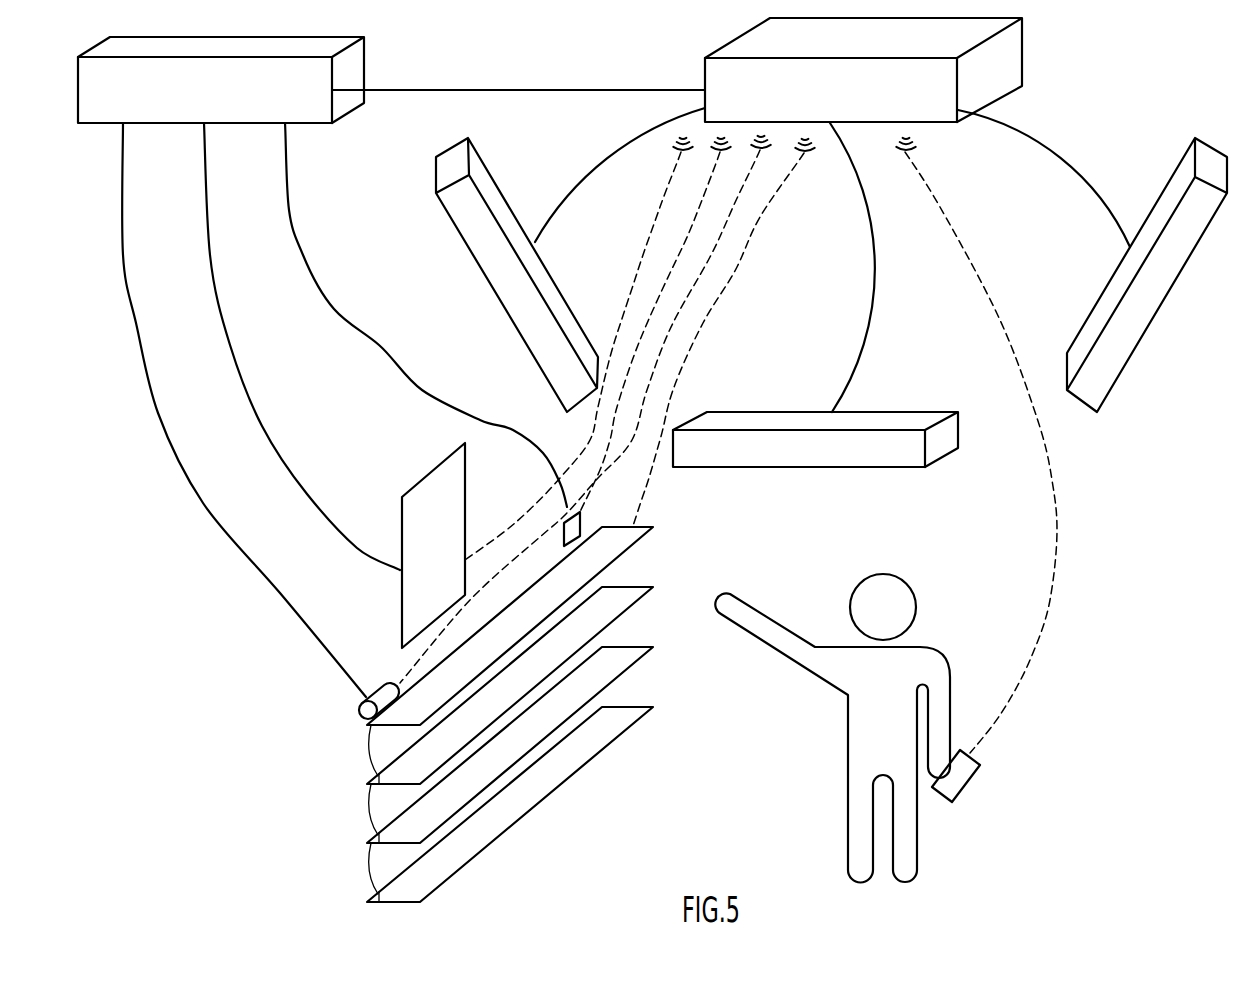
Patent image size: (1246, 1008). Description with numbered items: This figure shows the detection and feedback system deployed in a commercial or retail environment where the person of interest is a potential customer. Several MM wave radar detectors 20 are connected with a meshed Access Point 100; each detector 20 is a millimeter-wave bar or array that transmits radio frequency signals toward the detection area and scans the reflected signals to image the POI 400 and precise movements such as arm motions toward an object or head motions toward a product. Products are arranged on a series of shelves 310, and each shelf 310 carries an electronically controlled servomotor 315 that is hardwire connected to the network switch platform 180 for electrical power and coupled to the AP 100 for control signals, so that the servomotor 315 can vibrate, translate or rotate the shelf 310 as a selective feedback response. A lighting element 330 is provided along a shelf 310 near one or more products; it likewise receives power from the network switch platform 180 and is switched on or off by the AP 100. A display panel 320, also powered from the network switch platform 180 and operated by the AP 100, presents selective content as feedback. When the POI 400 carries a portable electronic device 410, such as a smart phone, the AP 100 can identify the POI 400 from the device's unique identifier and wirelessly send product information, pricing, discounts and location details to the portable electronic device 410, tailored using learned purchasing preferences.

The MM wave radar detector 20 is at (508, 200).
The meshed Access Point 100 is at (1023, 53).
The network switch platform 180 is at (220, 102).
The shelves 310 is at (325, 720).
The servomotor 315 is at (375, 684).
The display panel 320 is at (397, 506).
The lighting element 330 is at (562, 536).
The POI 400 is at (948, 667).
The portable electronic device 410 is at (962, 793).